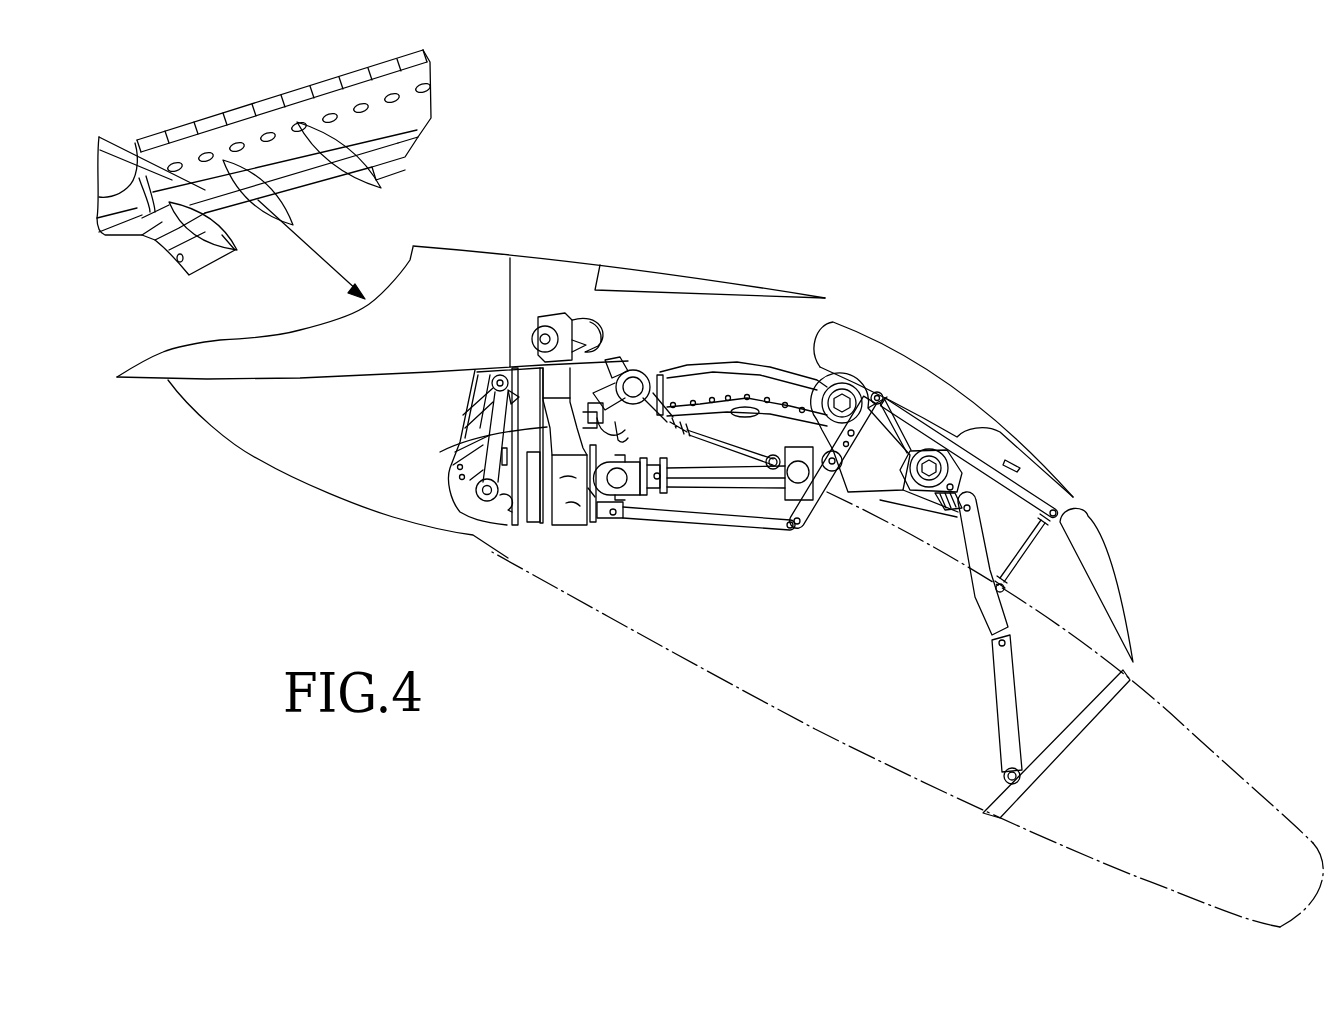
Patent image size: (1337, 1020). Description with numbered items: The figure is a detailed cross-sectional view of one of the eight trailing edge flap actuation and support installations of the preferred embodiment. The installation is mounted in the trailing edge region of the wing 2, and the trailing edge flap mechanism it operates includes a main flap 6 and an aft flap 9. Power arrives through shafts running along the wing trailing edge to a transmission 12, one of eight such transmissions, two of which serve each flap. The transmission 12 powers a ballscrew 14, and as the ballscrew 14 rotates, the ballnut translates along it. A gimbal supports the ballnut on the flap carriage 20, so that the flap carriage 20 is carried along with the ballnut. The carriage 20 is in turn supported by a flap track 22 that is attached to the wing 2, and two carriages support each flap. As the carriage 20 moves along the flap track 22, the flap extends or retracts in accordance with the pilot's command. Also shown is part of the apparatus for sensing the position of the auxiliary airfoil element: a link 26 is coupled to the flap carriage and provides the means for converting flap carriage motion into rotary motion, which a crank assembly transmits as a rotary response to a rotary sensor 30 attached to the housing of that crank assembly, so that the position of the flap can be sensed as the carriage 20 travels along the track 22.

The wing 2 is at (272, 124).
The main flap 6 is at (948, 388).
The aft flap 9 is at (1085, 547).
The transmission 12 is at (440, 452).
The ballscrew 14 is at (697, 488).
The flap carriage 20 is at (876, 497).
The flap track 22 is at (783, 372).
The link 26 is at (703, 435).
The rotary sensor 30 is at (638, 371).